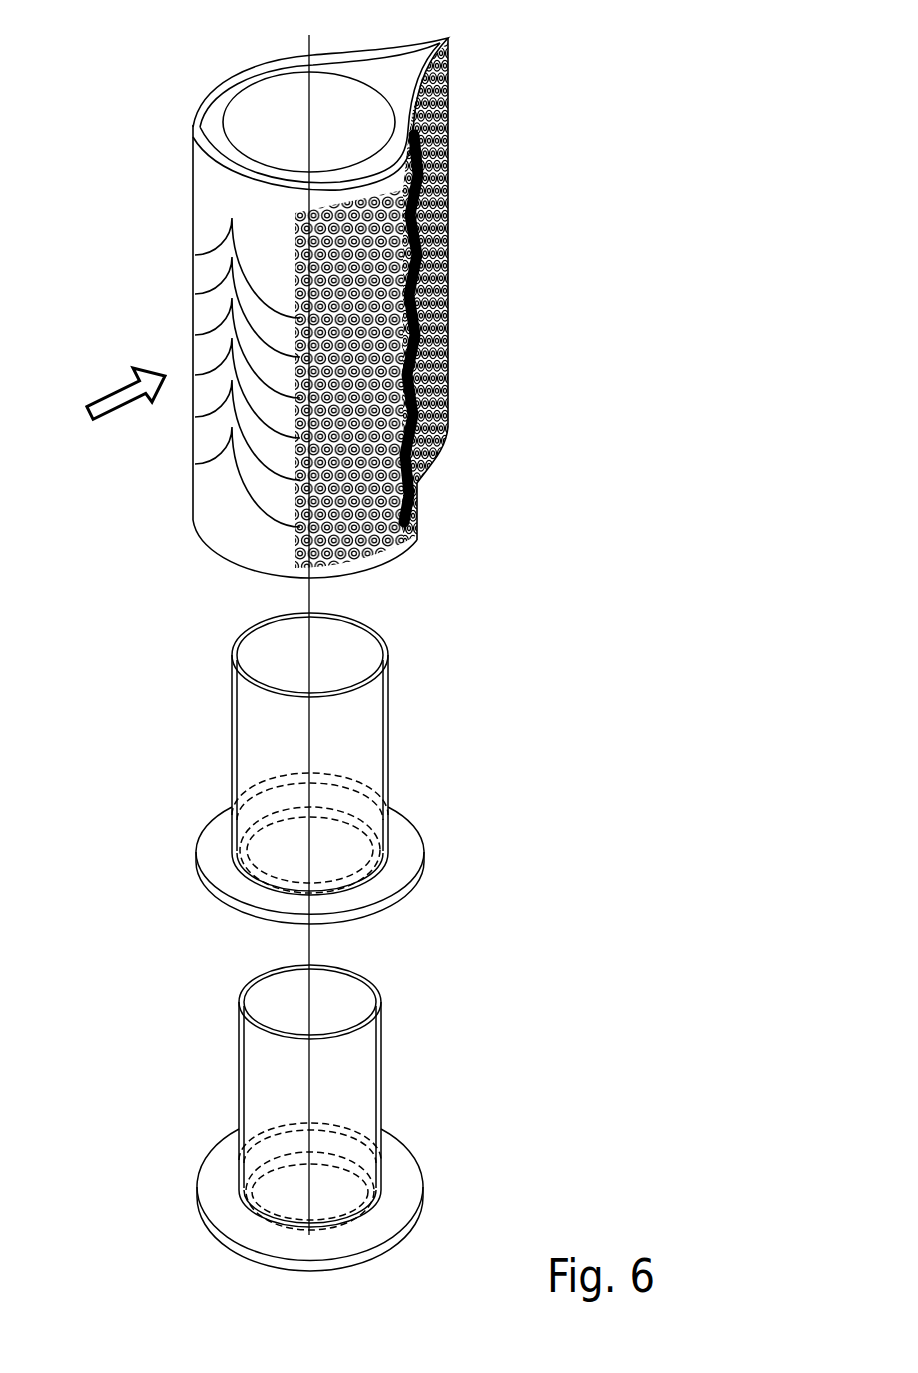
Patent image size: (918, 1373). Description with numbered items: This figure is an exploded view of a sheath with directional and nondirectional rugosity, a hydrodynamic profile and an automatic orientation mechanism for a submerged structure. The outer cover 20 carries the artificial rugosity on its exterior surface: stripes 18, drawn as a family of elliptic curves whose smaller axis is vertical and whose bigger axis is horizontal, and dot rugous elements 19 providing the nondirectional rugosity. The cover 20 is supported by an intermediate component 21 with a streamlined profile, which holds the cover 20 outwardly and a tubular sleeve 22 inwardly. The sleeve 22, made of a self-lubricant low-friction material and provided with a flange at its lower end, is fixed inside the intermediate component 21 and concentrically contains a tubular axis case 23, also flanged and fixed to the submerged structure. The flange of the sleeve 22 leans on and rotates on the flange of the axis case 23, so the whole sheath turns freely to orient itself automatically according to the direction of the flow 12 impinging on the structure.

The flow 12 is at (110, 387).
The stripes 18 is at (219, 453).
The dot rugous elements 19 is at (450, 262).
The cover 20 is at (448, 38).
The intermediate component 21 is at (388, 80).
The tubular sleeve 22 is at (387, 730).
The tubular axis case 23 is at (381, 1088).